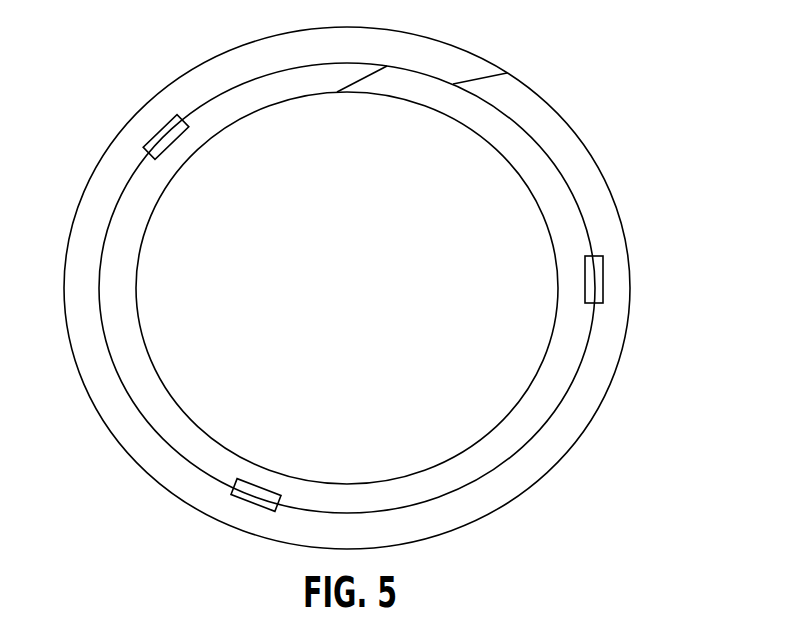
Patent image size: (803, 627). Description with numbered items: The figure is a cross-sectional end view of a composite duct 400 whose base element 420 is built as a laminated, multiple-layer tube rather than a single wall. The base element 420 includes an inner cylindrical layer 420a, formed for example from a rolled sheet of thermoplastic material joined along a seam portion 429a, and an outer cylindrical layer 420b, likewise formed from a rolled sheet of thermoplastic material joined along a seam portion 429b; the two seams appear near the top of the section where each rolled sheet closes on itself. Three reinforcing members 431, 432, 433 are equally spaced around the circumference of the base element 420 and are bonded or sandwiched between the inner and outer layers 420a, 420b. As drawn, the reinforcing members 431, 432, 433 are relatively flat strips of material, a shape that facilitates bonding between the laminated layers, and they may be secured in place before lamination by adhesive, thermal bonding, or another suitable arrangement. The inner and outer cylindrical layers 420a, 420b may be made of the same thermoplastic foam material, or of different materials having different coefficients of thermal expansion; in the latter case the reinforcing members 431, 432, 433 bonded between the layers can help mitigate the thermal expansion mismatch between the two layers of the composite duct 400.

The composite duct 400 is at (156, 46).
The base element 420 is at (614, 194).
The inner cylindrical layer 420a is at (567, 363).
The outer cylindrical layer 420b is at (570, 137).
The seam portion 429a is at (387, 66).
The seam portion 429b is at (507, 73).
The reinforcing member 431 is at (158, 134).
The reinforcing member 432 is at (252, 503).
The reinforcing member 433 is at (595, 278).